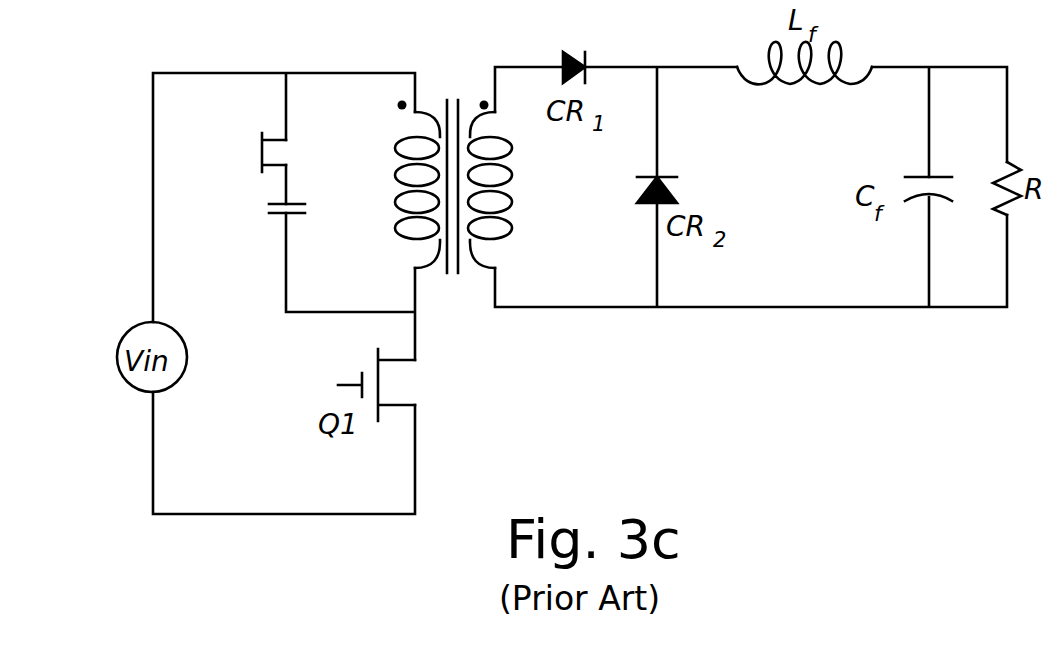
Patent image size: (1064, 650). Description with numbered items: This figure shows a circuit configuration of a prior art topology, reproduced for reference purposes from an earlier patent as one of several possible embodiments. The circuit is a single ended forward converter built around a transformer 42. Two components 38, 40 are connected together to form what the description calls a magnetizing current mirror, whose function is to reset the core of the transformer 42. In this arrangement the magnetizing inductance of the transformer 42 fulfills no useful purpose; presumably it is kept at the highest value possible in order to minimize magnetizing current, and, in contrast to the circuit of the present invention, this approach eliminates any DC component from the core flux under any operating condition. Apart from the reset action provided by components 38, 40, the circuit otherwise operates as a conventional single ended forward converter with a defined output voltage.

The component 38 is at (290, 214).
The component 40 is at (268, 165).
The transformer 42 is at (445, 270).